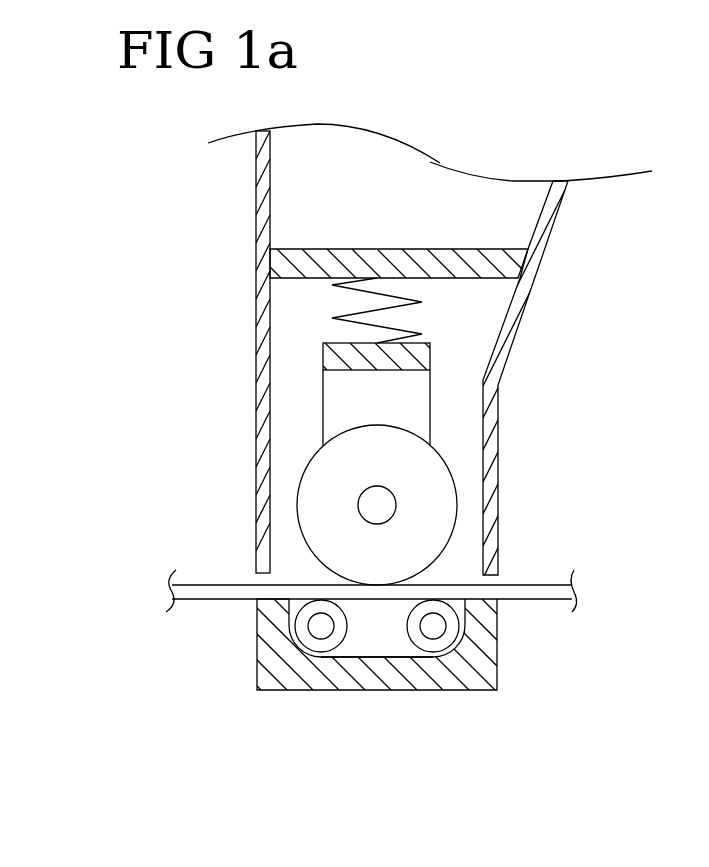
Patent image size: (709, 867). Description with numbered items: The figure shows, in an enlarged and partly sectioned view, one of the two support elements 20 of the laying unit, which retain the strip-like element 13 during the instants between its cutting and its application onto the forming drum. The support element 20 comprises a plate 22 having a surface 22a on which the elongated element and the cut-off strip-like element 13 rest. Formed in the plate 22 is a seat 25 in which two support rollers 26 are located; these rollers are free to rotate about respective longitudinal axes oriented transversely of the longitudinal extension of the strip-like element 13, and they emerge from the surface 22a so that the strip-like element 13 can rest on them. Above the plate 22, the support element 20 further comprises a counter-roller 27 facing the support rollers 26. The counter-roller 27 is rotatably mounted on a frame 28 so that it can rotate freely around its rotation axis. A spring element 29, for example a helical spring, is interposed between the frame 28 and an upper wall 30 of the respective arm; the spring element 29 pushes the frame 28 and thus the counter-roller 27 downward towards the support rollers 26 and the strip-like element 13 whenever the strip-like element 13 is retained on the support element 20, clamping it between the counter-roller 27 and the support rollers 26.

The support element 20 is at (195, 448).
The upper wall 30 is at (460, 262).
The spring element 29 is at (332, 312).
The frame 28 is at (400, 395).
The counter-roller 27 is at (432, 507).
The strip-like element 13 is at (537, 592).
The plate 22 is at (455, 675).
The surface 22a is at (273, 603).
The seat 25 is at (350, 648).
The support rollers 26 is at (315, 643).